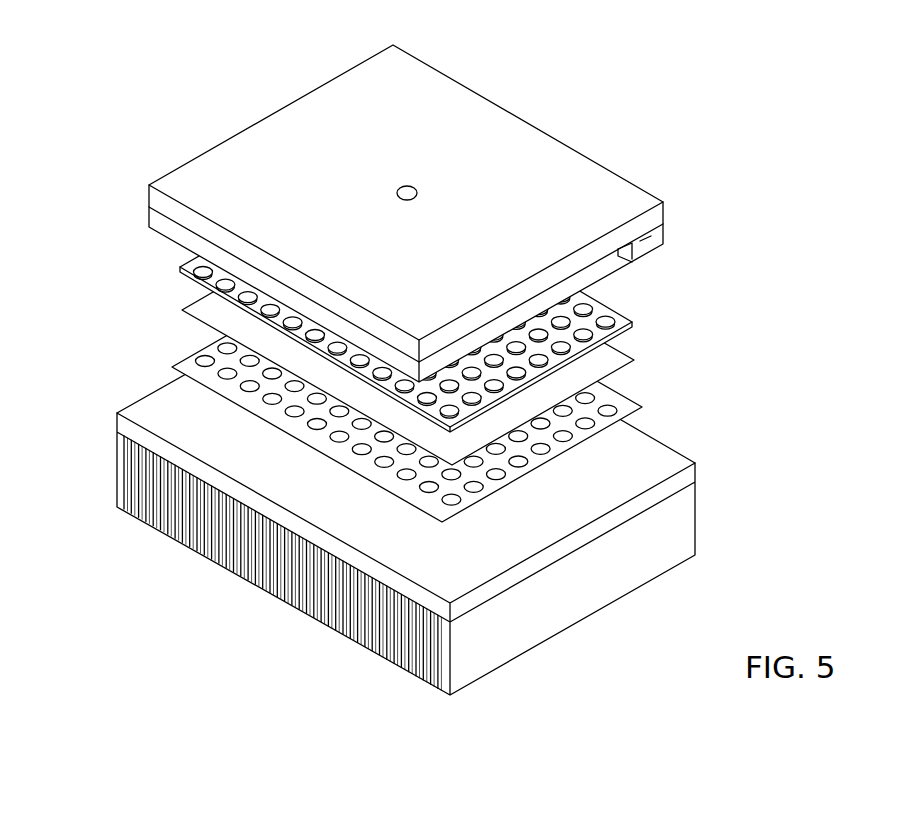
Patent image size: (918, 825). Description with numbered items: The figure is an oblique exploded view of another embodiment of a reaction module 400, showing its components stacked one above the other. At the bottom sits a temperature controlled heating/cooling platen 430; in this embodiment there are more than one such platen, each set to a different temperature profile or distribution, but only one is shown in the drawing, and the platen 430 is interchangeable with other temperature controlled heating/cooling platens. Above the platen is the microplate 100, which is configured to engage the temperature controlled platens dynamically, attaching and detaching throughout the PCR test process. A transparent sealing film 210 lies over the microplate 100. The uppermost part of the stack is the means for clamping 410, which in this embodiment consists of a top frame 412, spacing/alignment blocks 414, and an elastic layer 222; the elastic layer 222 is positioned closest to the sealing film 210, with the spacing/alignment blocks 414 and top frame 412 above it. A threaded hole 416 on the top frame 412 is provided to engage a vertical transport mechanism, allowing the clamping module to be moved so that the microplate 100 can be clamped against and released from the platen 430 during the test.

The microplate 100 is at (172, 366).
The transparent sealing film 210 is at (182, 312).
The elastic layer 222 is at (182, 268).
The reaction module 400 is at (114, 567).
The means for clamping 410 is at (427, 213).
The top frame 412 is at (346, 203).
The spacing/alignment blocks 414 is at (148, 214).
The threaded hole 416 is at (397, 193).
The temperature controlled heating/cooling platens 430 is at (700, 464).